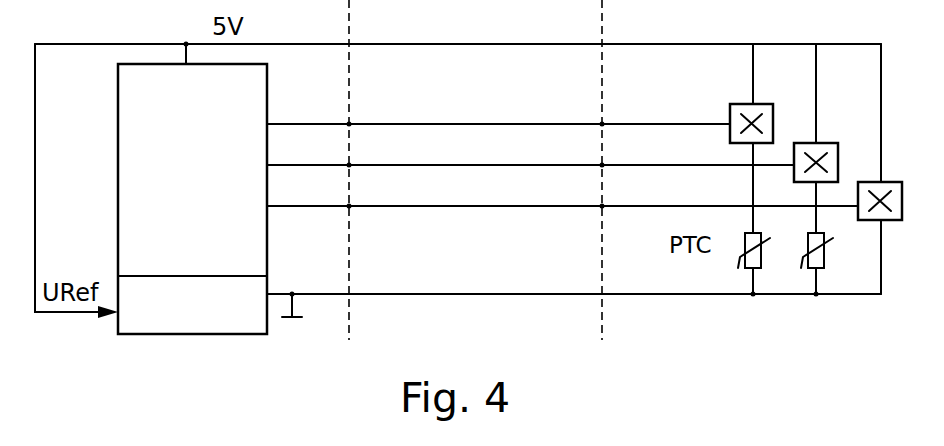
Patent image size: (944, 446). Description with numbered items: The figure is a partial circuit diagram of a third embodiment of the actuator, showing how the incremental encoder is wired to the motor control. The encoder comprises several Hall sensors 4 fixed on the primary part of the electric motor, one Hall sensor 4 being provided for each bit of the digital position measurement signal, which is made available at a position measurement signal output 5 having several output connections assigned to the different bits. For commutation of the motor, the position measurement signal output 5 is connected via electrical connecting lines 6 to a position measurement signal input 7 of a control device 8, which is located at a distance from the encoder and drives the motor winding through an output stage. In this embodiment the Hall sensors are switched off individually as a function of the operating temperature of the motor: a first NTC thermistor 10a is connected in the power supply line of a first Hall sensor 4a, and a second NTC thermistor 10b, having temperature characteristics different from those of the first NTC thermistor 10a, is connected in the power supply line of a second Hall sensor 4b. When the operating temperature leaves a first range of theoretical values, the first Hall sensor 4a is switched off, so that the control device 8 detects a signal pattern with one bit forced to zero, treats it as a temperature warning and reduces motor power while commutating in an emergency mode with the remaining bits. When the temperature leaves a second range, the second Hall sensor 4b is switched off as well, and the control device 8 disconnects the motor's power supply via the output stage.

The control device 8 is at (204, 172).
The position measurement signal input 7 is at (349, 206).
The electrical connecting lines 6 is at (483, 206).
The position measurement signal output 5 is at (602, 206).
The first Hall sensor 4a is at (741, 114).
The second Hall sensor 4b is at (805, 153).
The Hall sensor 4 is at (869, 191).
The first NTC thermistor 10a is at (753, 270).
The second NTC thermistor 10b is at (816, 270).